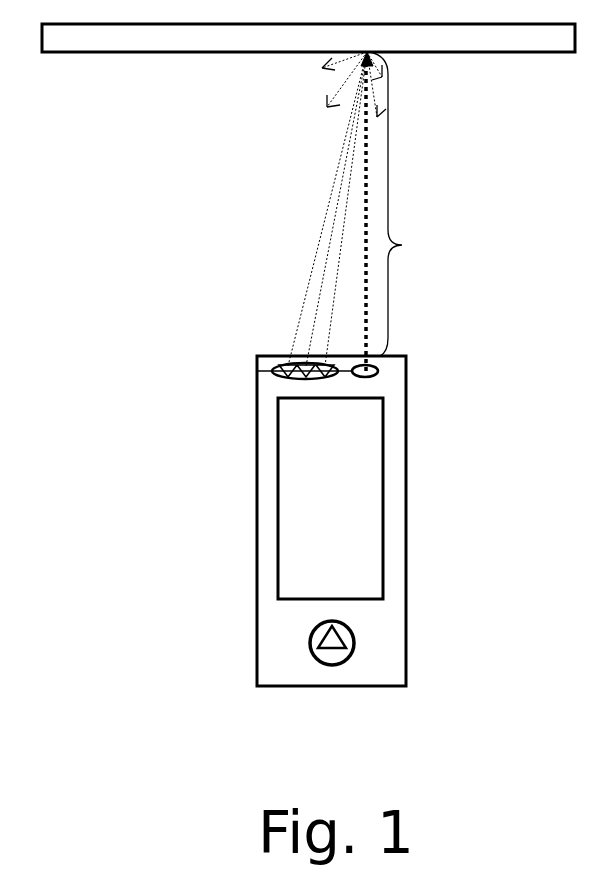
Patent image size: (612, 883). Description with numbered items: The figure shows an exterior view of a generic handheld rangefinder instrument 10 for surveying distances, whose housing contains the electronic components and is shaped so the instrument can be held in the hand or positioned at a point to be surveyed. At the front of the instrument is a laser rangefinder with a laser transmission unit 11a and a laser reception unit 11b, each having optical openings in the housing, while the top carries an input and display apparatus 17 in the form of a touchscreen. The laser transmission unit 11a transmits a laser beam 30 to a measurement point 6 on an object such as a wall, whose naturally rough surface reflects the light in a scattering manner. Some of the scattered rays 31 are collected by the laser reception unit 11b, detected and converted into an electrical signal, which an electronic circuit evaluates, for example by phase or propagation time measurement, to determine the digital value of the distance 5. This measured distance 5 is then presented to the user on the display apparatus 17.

The distance 5 is at (401, 204).
The measurement point 6 is at (370, 53).
The handheld rangefinder instrument 10 is at (237, 344).
The laser transmission unit 11a is at (375, 377).
The laser reception unit 11b is at (292, 378).
The input and display apparatus 17 is at (287, 453).
The laser beam 30 is at (365, 240).
The rays 31 is at (322, 222).